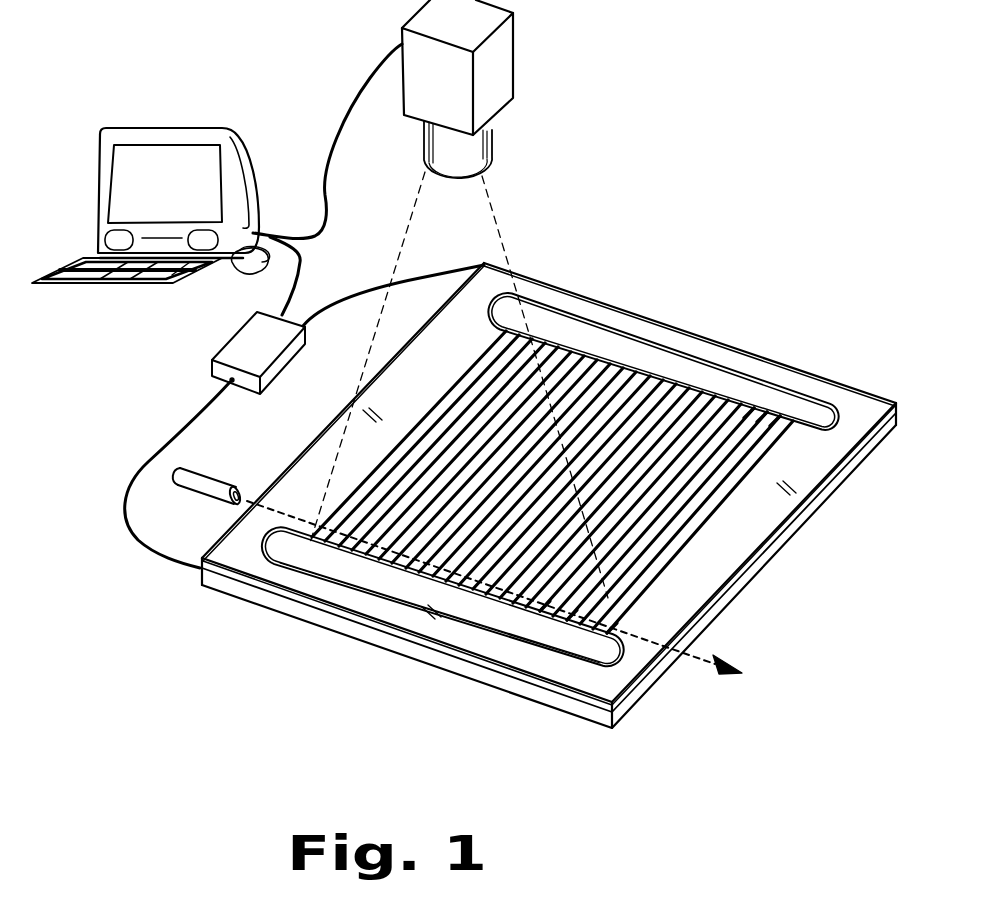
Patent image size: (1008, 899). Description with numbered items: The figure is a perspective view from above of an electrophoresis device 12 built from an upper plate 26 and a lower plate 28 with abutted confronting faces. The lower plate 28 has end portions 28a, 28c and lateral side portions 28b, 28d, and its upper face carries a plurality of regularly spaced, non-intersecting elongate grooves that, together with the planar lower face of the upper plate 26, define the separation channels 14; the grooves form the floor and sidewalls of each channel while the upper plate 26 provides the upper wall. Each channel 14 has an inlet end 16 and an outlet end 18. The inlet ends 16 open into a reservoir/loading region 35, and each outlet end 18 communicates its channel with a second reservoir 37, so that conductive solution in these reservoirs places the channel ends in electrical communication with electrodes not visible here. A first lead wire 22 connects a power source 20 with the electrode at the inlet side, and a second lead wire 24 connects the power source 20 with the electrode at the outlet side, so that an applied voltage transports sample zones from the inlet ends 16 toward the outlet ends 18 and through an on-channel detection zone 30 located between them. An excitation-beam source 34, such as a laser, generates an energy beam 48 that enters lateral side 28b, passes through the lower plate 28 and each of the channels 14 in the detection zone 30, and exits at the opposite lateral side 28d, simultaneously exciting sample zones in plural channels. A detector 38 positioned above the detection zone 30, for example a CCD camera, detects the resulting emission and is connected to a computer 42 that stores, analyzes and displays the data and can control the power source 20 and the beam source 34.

The electrophoresis device 12 is at (568, 458).
The separation channels 14 is at (623, 497).
The inlet ends 16 is at (792, 430).
The outlet ends 18 is at (605, 628).
The power source 20 is at (245, 340).
The first lead wire 22 is at (370, 289).
The second lead wire 24 is at (168, 437).
The upper plate 26 is at (815, 462).
The lower plate 28 is at (561, 491).
The end portion of lower plate 28a is at (405, 645).
The lateral side portion of lower plate 28b is at (288, 470).
The end portion of lower plate 28c is at (674, 331).
The lateral side portion of lower plate 28d is at (715, 612).
The detection zone 30 is at (295, 612).
The excitation-beam source 34 is at (204, 478).
The reservoir/loading region 35 is at (556, 327).
The second reservoir 37 is at (328, 628).
The detector 38 is at (513, 117).
The computer 42 is at (97, 135).
The energy beam 48 is at (520, 610).